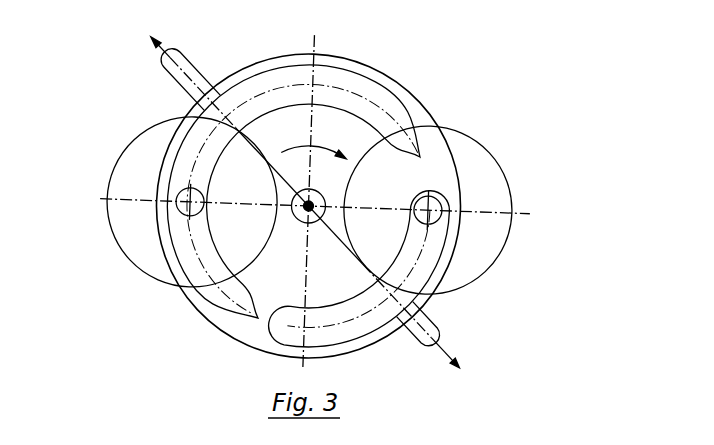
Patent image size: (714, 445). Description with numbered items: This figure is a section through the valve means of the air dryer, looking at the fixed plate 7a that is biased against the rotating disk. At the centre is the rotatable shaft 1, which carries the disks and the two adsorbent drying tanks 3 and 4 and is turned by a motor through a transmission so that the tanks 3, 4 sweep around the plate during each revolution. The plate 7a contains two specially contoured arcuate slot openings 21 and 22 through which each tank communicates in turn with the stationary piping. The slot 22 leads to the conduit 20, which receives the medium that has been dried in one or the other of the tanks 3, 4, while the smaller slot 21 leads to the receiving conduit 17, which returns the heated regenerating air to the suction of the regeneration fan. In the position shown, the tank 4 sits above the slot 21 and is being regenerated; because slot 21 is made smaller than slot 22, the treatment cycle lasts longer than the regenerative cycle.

The central rotatable shaft 1 is at (306, 214).
The drying tank 3 is at (135, 247).
The drying tank 4 is at (483, 162).
The fixed plate 7a is at (267, 335).
The receiving conduit 17 is at (423, 320).
The conduit 20 is at (198, 91).
The arcuate slot opening 21 is at (365, 323).
The arcuate slot opening 22 is at (240, 305).